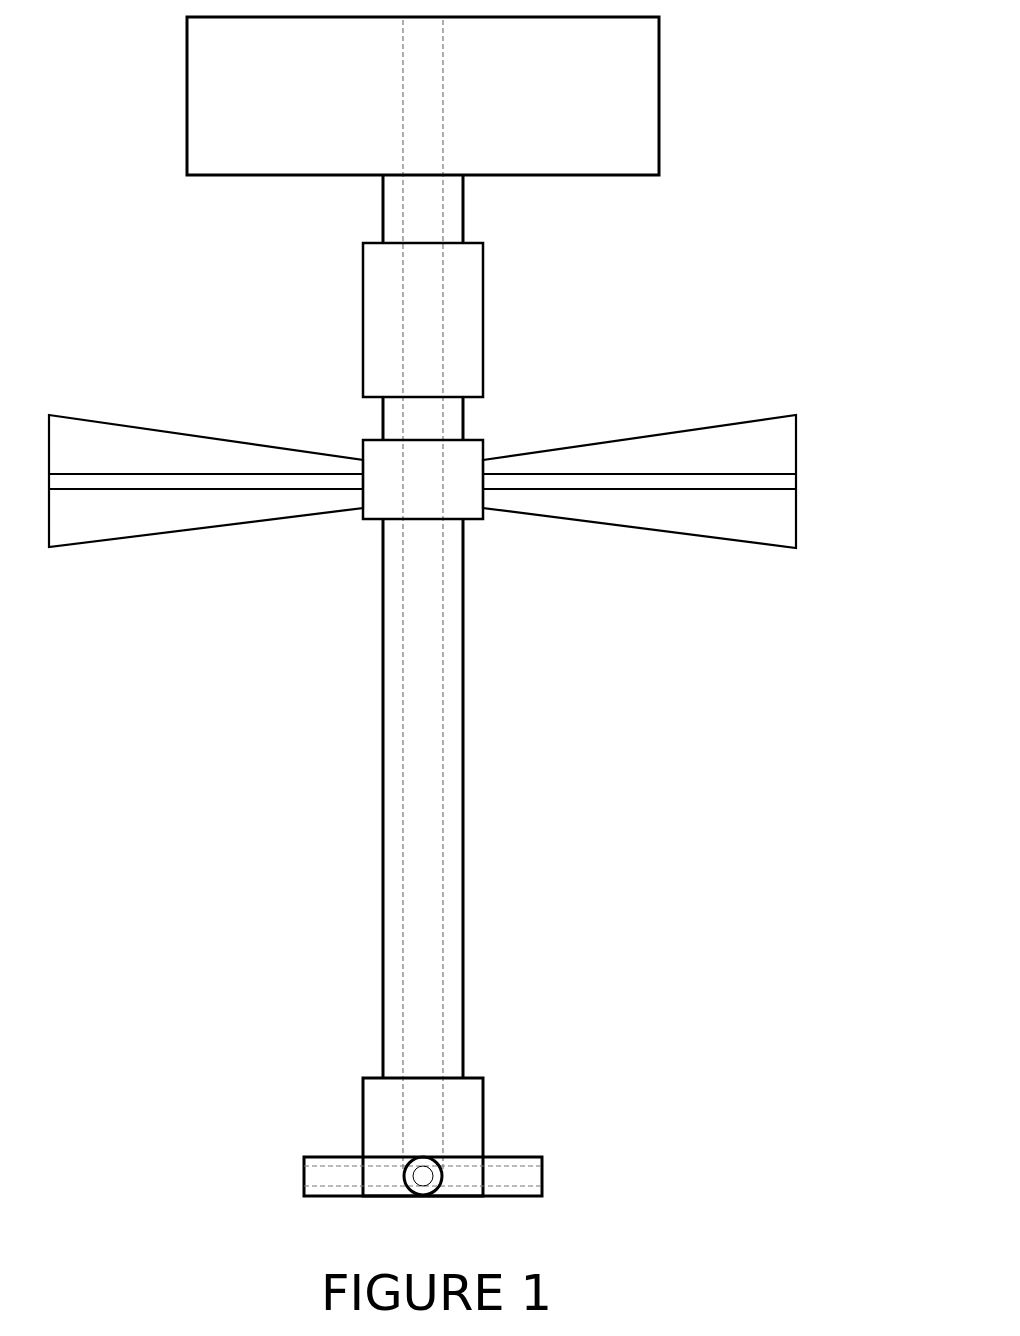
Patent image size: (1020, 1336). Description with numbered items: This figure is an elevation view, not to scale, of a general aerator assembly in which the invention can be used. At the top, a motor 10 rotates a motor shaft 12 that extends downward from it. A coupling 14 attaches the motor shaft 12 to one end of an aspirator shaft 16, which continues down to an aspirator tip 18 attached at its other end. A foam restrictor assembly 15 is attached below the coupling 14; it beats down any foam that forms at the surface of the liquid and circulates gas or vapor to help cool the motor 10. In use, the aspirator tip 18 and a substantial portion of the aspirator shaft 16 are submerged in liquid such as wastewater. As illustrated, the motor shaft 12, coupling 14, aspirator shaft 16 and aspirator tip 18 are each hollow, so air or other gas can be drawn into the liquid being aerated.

The motor 10 is at (660, 135).
The motor shaft 12 is at (464, 196).
The coupling 14 is at (484, 313).
The foam restrictor assembly 15 is at (798, 530).
The aspirator shaft 16 is at (465, 607).
The aspirator tip 18 is at (485, 1097).